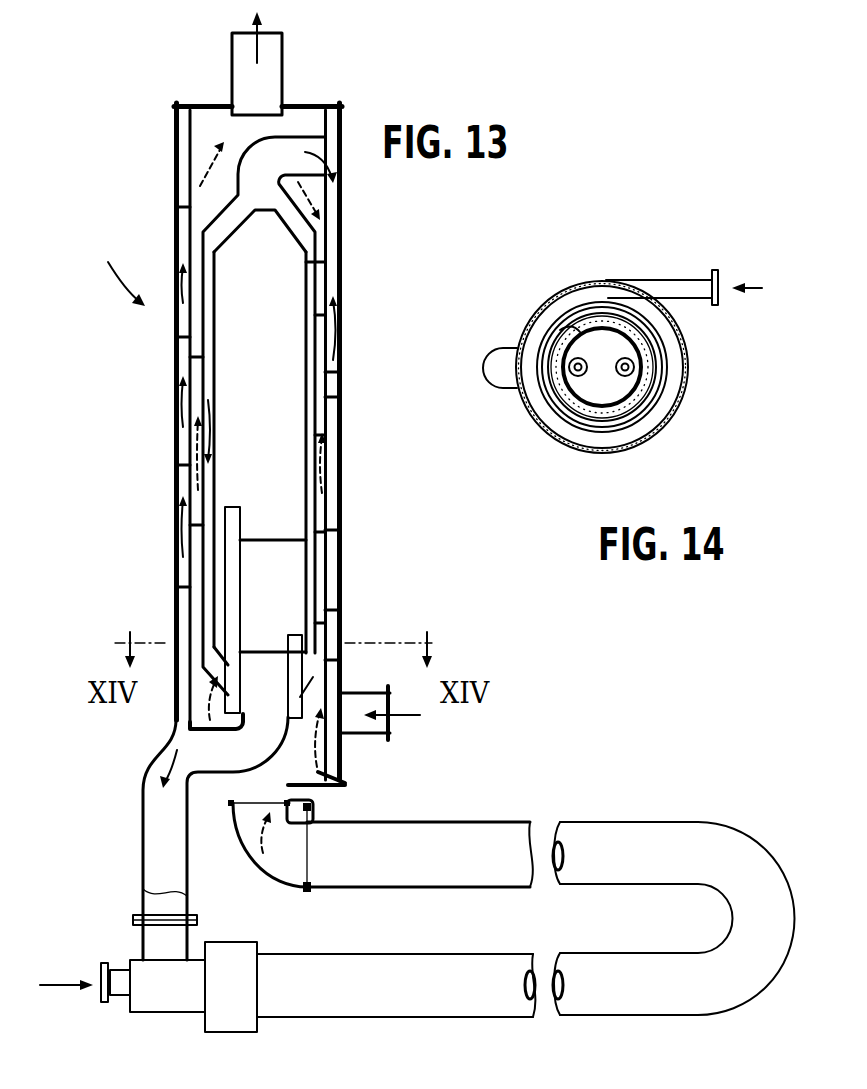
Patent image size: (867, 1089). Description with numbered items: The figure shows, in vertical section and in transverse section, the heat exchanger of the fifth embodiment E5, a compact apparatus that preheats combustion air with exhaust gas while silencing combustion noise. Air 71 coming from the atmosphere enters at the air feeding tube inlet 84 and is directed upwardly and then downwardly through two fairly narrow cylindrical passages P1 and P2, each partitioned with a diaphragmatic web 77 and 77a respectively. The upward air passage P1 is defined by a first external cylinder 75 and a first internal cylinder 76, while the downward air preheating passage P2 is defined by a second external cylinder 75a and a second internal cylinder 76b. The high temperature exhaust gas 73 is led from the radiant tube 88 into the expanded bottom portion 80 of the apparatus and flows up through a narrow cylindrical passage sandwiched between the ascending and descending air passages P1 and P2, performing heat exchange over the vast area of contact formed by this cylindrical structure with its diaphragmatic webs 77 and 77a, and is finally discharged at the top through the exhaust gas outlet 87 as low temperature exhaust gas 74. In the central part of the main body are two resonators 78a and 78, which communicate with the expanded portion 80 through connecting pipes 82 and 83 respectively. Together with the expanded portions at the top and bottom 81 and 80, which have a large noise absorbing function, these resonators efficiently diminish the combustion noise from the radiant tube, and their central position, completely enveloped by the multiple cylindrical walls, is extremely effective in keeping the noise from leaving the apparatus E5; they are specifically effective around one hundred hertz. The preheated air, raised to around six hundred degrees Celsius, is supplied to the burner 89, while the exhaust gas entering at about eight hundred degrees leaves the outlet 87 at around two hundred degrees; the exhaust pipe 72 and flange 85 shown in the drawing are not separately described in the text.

In FIG. 13, the air 71 is at (395, 728).
In FIG. 14, the air 71 is at (748, 288).
In FIG. 13, the exhaust pipe 72 is at (158, 864).
In FIG. 13, the high temperature exhaust gas 73 is at (266, 790).
In FIG. 13, the low temperature exhaust gas 74 is at (258, 33).
In FIG. 13, the first external cylinder 75 is at (342, 452).
In FIG. 14, the first external cylinder 75 is at (688, 366).
In FIG. 13, the second external cylinder 75a is at (316, 274).
In FIG. 13, the first internal cylinder 76 is at (328, 372).
In FIG. 14, the first internal cylinder 76 is at (668, 334).
In FIG. 13, the second internal cylinder 76b is at (312, 320).
In FIG. 13, the diaphragmatic web 77 is at (328, 398).
In FIG. 14, the diaphragmatic web 77 is at (542, 320).
In FIG. 13, the diaphragmatic web 77a is at (213, 372).
In FIG. 14, the diaphragmatic web 77a is at (575, 325).
In FIG. 13, the resonator 78 is at (290, 614).
In FIG. 14, the resonator 78 is at (595, 398).
In FIG. 13, the resonator 78a is at (294, 440).
In FIG. 13, the expanded bottom portion 80 is at (355, 776).
In FIG. 13, the expanded top portion 81 is at (198, 148).
In FIG. 13, the connecting pipe 82 is at (228, 568).
In FIG. 13, the connecting pipe 83 is at (305, 676).
In FIG. 13, the air feeding tube inlet 84 is at (368, 737).
In FIG. 14, the air feeding tube inlet 84 is at (695, 282).
In FIG. 13, the flange 85 is at (150, 930).
In FIG. 13, the exhaust gas outlet 87 is at (283, 70).
In FIG. 13, the radiant tube 88 is at (600, 832).
In FIG. 13, the burner 89 is at (152, 1000).
In FIG. 13, the fifth embodiment E5 is at (116, 265).
In FIG. 13, the upward air passage P1 is at (330, 612).
In FIG. 14, the upward air passage P1 is at (680, 405).
In FIG. 13, the downward air preheating passage P2 is at (313, 572).
In FIG. 14, the downward air preheating passage P2 is at (615, 408).